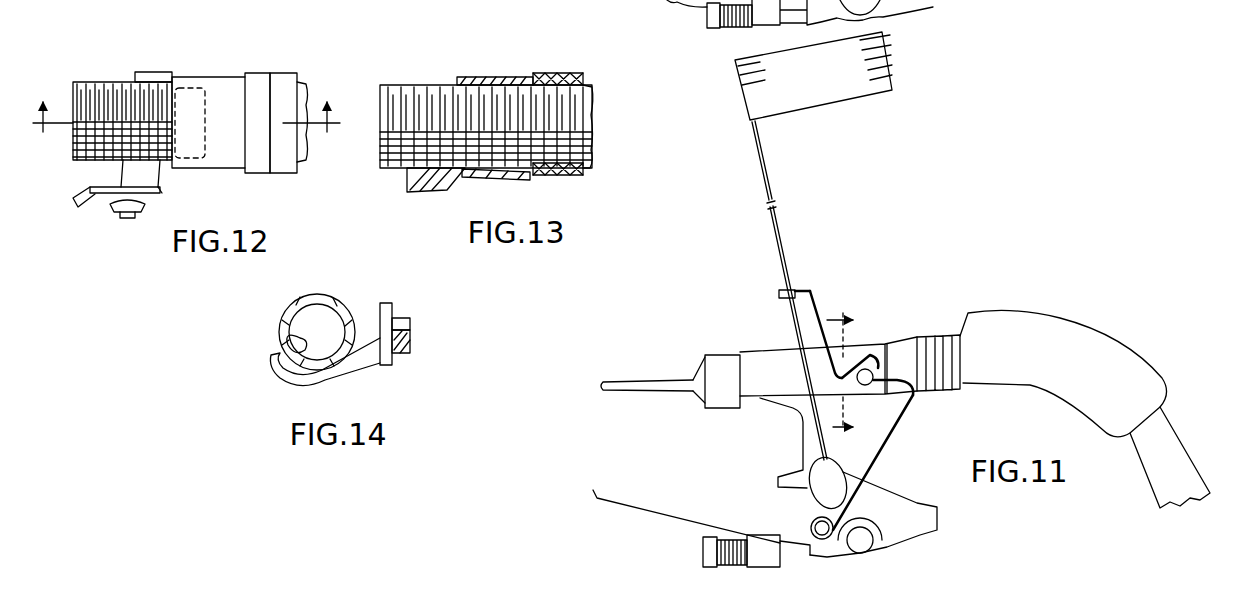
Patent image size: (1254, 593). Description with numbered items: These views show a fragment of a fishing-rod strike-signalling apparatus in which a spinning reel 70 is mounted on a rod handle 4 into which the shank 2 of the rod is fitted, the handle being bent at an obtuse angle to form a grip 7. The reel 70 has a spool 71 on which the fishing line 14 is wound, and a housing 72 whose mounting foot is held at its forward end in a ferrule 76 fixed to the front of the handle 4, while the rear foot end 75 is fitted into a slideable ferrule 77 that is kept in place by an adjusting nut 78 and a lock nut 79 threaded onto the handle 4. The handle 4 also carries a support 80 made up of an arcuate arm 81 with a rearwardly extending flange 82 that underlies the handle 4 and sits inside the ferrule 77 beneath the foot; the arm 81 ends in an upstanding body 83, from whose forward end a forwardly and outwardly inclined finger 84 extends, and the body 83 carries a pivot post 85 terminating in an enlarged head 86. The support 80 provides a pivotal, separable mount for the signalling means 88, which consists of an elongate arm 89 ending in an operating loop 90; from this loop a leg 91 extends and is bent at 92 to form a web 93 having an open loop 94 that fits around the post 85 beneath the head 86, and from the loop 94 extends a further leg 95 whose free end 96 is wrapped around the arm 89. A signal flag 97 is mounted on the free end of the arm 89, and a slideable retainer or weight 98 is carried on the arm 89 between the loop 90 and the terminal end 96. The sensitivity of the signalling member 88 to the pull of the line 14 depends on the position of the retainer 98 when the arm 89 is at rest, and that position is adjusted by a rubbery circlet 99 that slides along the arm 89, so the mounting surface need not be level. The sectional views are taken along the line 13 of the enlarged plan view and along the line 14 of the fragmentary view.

In FIG. 11, the shank 2 is at (633, 381).
In FIG. 12, the handle 4 is at (88, 84).
In FIG. 13, the handle 4 is at (410, 86).
In FIG. 14, the handle 4 is at (343, 301).
In FIG. 11, the handle 4 is at (750, 360).
In FIG. 11, the grip 7 is at (1152, 467).
In FIG. 12, the section line 13— 13 is at (184, 132).
In FIG. 11, the fishing line 14 is at (617, 520).
In FIG. 11, the reel 70 is at (946, 3).
In FIG. 11, the spool 71 is at (702, 553).
In FIG. 11, the housing 72 is at (803, 445).
In FIG. 14, the rear foot end 75 is at (278, 333).
In FIG. 11, the ferrule 76 is at (720, 399).
In FIG. 13, the slideable ferrule 77 is at (487, 77).
In FIG. 12, the adjusting nut 78 is at (256, 78).
In FIG. 13, the adjusting nut 78 is at (547, 73).
In FIG. 11, the adjusting nut 78 is at (940, 397).
In FIG. 12, the lock nut 79 is at (288, 78).
In FIG. 13, the lock nut 79 is at (575, 74).
In FIG. 11, the lock nut 79 is at (950, 402).
In FIG. 14, the support 80 is at (352, 341).
In FIG. 12, the arcuate arm 81 is at (163, 170).
In FIG. 13, the arcuate arm 81 is at (420, 193).
In FIG. 14, the arcuate arm 81 is at (302, 377).
In FIG. 12, the rearwardly extending flange 82 is at (205, 102).
In FIG. 13, the rearwardly extending flange 82 is at (480, 177).
In FIG. 12, the upstanding body 83 is at (163, 194).
In FIG. 14, the upstanding body 83 is at (392, 306).
In FIG. 12, the finger 84 is at (75, 203).
In FIG. 14, the finger 84 is at (410, 324).
In FIG. 12, the pivot post 85 is at (115, 214).
In FIG. 12, the enlarged head 86 is at (129, 218).
In FIG. 14, the enlarged head 86 is at (410, 346).
In FIG. 11, the enlarged head 86 is at (857, 380).
In FIG. 11, the signalling means 88 is at (829, 352).
In FIG. 11, the elongate arm 89 is at (773, 237).
In FIG. 11, the operating loop 90 is at (798, 540).
In FIG. 11, the leg 91 is at (878, 472).
In FIG. 11, the bend 92 is at (912, 388).
In FIG. 11, the web 93 is at (903, 370).
In FIG. 11, the open loop 94 is at (882, 343).
In FIG. 11, the wire diagonal 95 is at (805, 330).
In FIG. 11, the free end 96 is at (805, 288).
In FIG. 11, the signal flag 97 is at (853, 92).
In FIG. 11, the slideable retainer or weight 98 is at (836, 470).
In FIG. 11, the rubbery circlet 99 is at (779, 297).